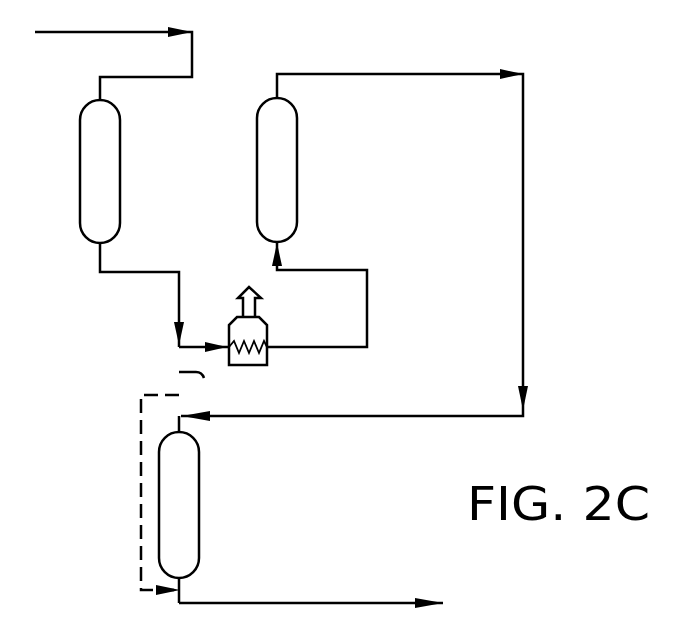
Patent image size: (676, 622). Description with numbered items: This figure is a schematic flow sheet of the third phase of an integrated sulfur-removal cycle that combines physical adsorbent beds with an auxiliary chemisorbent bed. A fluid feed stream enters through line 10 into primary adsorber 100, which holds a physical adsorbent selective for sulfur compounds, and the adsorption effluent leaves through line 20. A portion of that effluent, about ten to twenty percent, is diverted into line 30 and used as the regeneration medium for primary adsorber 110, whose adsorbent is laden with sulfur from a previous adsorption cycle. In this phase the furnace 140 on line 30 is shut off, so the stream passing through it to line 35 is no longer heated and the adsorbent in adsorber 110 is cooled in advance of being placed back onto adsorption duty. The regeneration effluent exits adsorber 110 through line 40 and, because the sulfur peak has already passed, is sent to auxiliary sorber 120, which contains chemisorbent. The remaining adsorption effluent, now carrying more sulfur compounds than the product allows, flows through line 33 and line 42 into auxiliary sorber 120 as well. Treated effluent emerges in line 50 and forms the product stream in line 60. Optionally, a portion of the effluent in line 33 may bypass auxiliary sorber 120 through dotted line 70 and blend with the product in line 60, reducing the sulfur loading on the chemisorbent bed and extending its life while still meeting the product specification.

The line 10 is at (118, 30).
The primary adsorber 100 is at (120, 170).
The line 20 is at (152, 272).
The line 30 is at (196, 344).
The furnace 140 is at (267, 355).
The line 35 is at (367, 313).
The primary adsorber 110 is at (297, 168).
The line 40 is at (278, 85).
The line 33 is at (202, 386).
The line 42 is at (183, 426).
The auxiliary sorber 120 is at (199, 505).
The dotted line 70 is at (141, 499).
The line 50 is at (183, 583).
The line 60 is at (330, 601).